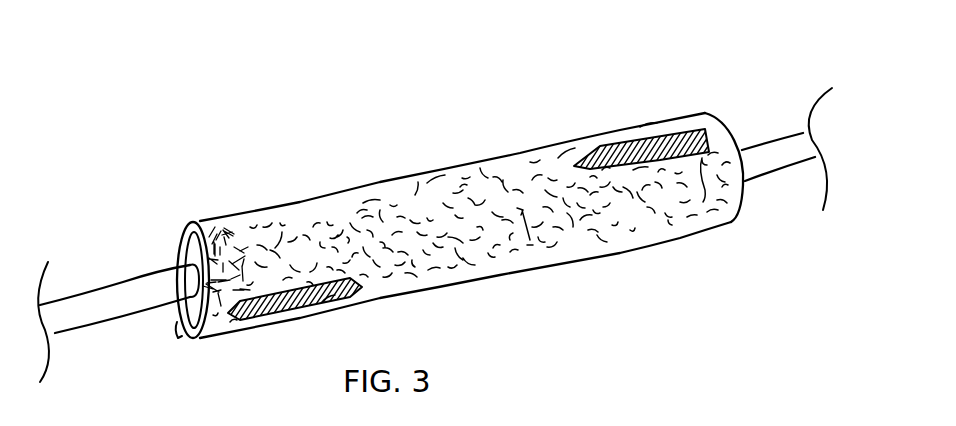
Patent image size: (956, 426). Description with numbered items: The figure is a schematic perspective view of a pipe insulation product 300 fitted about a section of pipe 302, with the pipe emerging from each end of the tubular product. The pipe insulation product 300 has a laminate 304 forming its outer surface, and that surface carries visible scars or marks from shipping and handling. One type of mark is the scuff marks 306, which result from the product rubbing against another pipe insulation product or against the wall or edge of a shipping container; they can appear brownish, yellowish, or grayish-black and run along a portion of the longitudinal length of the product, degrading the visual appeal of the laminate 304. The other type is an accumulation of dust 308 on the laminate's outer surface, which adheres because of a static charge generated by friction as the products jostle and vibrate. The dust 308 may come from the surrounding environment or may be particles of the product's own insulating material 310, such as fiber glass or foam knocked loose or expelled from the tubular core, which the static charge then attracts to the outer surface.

The pipe insulation product 300 is at (742, 78).
The pipe 302 is at (127, 303).
The laminate 304 is at (737, 220).
The scuff marks 306 is at (605, 158).
The dust accumulation 308 is at (575, 230).
The insulating material 310 is at (185, 238).